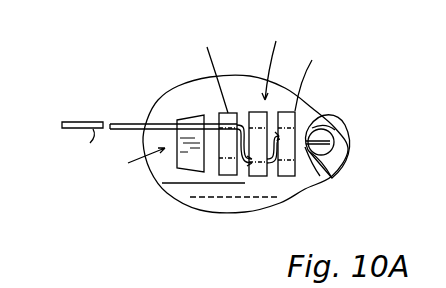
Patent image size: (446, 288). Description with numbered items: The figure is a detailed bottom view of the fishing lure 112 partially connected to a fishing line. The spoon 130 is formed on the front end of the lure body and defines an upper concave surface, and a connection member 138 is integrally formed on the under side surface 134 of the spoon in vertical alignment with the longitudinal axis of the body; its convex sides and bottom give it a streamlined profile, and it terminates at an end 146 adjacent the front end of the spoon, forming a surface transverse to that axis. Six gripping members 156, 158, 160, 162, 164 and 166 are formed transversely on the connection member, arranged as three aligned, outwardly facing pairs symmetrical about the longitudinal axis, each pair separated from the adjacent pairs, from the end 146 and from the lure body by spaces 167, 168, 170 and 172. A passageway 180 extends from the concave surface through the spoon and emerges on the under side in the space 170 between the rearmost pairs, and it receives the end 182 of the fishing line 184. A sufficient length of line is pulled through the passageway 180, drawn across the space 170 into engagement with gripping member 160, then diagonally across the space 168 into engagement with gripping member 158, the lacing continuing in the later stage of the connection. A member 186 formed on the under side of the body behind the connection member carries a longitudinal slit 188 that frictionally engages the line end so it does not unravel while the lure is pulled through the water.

The housing 112 is at (334, 118).
The spoon 130 is at (217, 212).
The under side surface 134 is at (242, 197).
The connection member 138 is at (278, 61).
The end 146 is at (128, 161).
The gripping member 156 is at (245, 183).
The gripping member 158 is at (213, 112).
The gripping member 160 is at (258, 177).
The gripping member 162 is at (252, 110).
The gripping member 164 is at (289, 176).
The gripping member 166 is at (320, 80).
The space 167 is at (222, 105).
The space 168 is at (210, 71).
The space 170 is at (280, 111).
The space 172 is at (310, 124).
The passageway 180 is at (313, 175).
The end 182 is at (62, 123).
The fishing line 184 is at (69, 143).
The member 186 is at (339, 143).
The longitudinal slit 188 is at (322, 163).